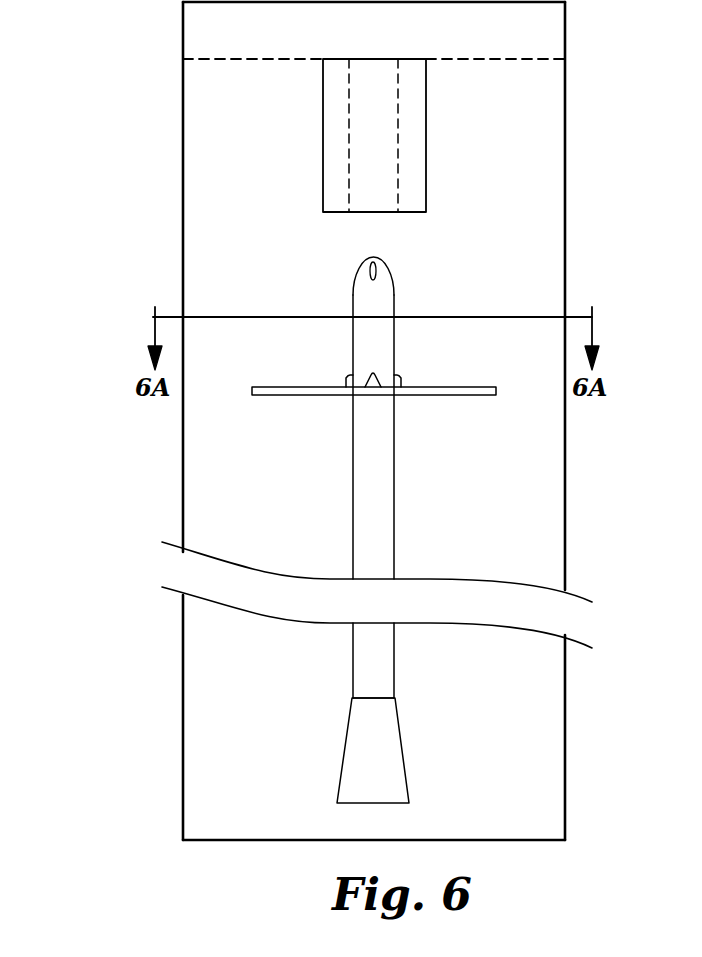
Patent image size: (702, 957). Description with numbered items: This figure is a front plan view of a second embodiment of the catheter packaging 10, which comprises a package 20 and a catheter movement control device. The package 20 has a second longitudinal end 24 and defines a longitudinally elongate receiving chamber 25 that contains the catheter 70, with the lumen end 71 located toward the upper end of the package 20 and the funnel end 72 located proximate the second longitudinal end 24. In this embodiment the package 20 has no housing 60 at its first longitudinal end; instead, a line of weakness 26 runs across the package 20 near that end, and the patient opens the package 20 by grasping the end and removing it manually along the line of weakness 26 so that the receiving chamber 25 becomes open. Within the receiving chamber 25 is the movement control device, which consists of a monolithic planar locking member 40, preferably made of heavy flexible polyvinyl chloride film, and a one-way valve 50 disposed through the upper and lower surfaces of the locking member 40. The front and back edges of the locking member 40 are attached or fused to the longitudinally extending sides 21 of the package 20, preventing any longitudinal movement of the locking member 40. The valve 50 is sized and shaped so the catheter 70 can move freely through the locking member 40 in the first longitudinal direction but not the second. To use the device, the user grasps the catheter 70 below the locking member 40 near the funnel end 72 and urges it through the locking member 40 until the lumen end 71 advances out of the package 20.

The catheter packaging 10 is at (114, 140).
The package 20 is at (183, 430).
The longitudinally extending side 21 is at (565, 525).
The second longitudinal end 24 is at (243, 842).
The receiving chamber 25 is at (538, 692).
The line of weakness 26 is at (205, 59).
The monolithic planar locking member 40 is at (482, 385).
The valve 50 is at (400, 380).
The housing 60 is at (426, 92).
The catheter 70 is at (357, 673).
The lumen end 71 is at (378, 258).
The funnel end 72 is at (397, 768).